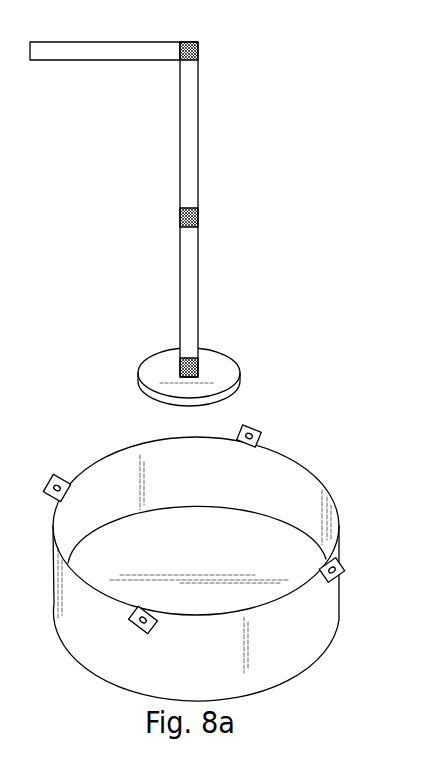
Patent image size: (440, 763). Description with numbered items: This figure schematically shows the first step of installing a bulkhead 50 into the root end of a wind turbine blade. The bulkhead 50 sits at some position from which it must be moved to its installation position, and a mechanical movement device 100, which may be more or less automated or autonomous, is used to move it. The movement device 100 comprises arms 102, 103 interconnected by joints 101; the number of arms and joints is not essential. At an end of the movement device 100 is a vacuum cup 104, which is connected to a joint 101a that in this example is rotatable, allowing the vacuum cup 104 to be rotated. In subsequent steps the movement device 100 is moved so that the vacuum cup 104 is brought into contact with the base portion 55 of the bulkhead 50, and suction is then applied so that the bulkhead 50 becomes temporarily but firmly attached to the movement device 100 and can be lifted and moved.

The mechanical movement device 100 is at (207, 209).
The joint 101 is at (200, 44).
The joint 101a is at (180, 370).
The arm 102 is at (105, 48).
The arm 103 is at (187, 105).
The vacuum cup 104 is at (227, 370).
The bulkhead 50 is at (200, 535).
The base portion 55 is at (137, 543).